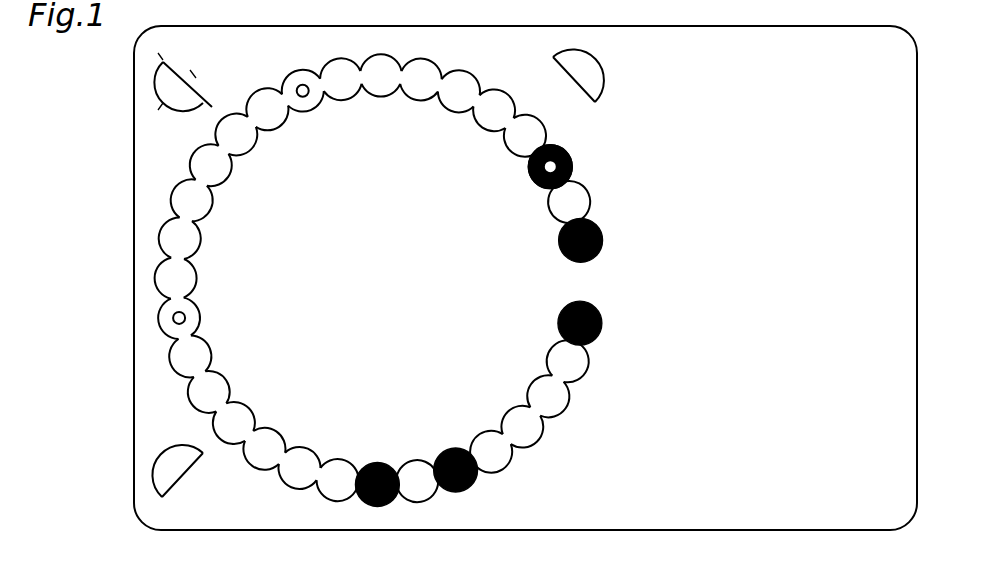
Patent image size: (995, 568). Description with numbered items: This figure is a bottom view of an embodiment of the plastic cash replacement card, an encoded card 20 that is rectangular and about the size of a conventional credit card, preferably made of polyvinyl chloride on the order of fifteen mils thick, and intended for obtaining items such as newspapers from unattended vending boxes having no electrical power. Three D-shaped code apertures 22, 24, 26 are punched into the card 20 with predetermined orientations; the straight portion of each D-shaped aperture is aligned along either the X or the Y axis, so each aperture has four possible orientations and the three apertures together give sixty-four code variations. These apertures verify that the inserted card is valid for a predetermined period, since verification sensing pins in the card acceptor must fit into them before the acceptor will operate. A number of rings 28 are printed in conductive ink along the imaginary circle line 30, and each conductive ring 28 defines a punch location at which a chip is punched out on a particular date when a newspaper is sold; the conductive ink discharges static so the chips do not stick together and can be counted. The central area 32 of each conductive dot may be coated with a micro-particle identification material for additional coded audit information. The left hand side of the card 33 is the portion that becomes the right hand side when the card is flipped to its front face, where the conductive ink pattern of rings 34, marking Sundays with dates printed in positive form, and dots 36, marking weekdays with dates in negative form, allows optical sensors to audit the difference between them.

The encoded card 20 is at (432, 23).
The D-shaped code aperture 22 is at (174, 85).
The D-shaped code aperture 24 is at (173, 473).
The D-shaped code aperture 26 is at (583, 63).
The conductive ring 28 is at (497, 146).
The imaginary circle line 30 is at (521, 169).
The central area 32 is at (567, 200).
The left hand side of the card 33 is at (340, 530).
The conductive ring 34 is at (575, 157).
The conductive dot 36 is at (605, 233).